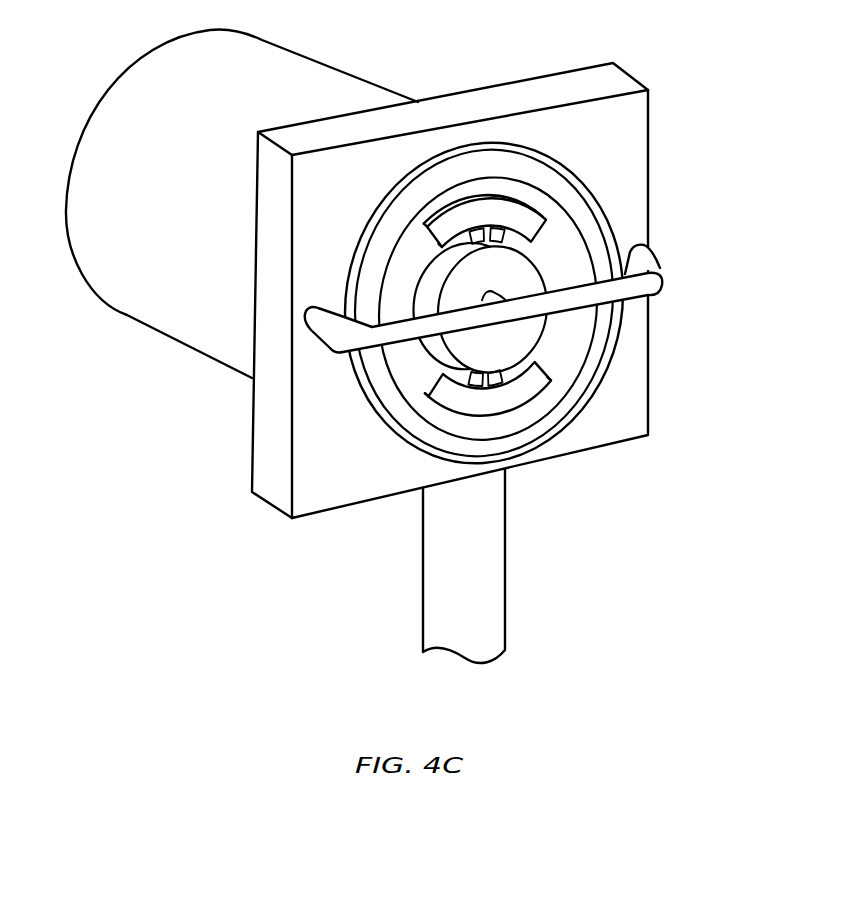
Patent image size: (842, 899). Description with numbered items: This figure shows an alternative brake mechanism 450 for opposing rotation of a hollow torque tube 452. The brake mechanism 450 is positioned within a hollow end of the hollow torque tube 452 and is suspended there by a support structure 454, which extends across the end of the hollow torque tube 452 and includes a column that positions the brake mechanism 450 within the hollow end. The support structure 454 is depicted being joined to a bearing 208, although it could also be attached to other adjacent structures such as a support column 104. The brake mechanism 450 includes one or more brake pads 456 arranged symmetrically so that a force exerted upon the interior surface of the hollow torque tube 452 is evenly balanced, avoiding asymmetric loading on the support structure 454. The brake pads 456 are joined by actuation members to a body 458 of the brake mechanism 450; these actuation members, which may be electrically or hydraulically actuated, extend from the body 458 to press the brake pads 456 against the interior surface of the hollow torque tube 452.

The support column 104 is at (443, 576).
The bearing 208 is at (311, 209).
The brake mechanism 450 is at (558, 329).
The hollow torque tube 452 is at (160, 209).
The support structure 454 is at (665, 272).
The brake pads 456 is at (545, 202).
The body 458 is at (474, 277).